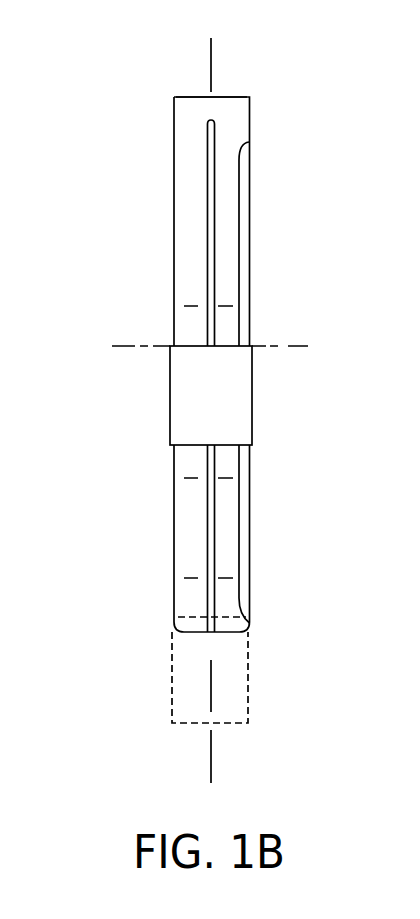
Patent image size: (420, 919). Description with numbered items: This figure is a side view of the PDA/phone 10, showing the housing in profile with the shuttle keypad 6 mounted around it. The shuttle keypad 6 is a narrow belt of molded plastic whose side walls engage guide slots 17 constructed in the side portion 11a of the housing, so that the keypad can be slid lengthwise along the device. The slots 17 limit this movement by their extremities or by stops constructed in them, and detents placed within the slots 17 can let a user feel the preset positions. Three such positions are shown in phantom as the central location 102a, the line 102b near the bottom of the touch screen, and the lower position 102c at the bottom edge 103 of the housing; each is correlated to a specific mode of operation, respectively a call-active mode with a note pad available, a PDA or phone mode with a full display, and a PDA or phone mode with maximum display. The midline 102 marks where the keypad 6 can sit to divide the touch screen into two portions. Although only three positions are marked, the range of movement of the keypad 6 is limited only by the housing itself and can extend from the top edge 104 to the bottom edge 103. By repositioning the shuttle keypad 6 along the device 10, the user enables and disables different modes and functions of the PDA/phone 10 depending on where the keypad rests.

The PDA/phone 10 is at (124, 211).
The top edge 104 is at (191, 97).
The side portion 11a is at (238, 108).
The guide slots 17 is at (207, 267).
The shuttle keypad 6 is at (188, 420).
The midline 102 is at (122, 350).
The central location 102a is at (186, 306).
The line near bottom of touch screen 102b is at (186, 478).
The lower position 102c is at (186, 578).
The bottom edge 103 is at (178, 629).